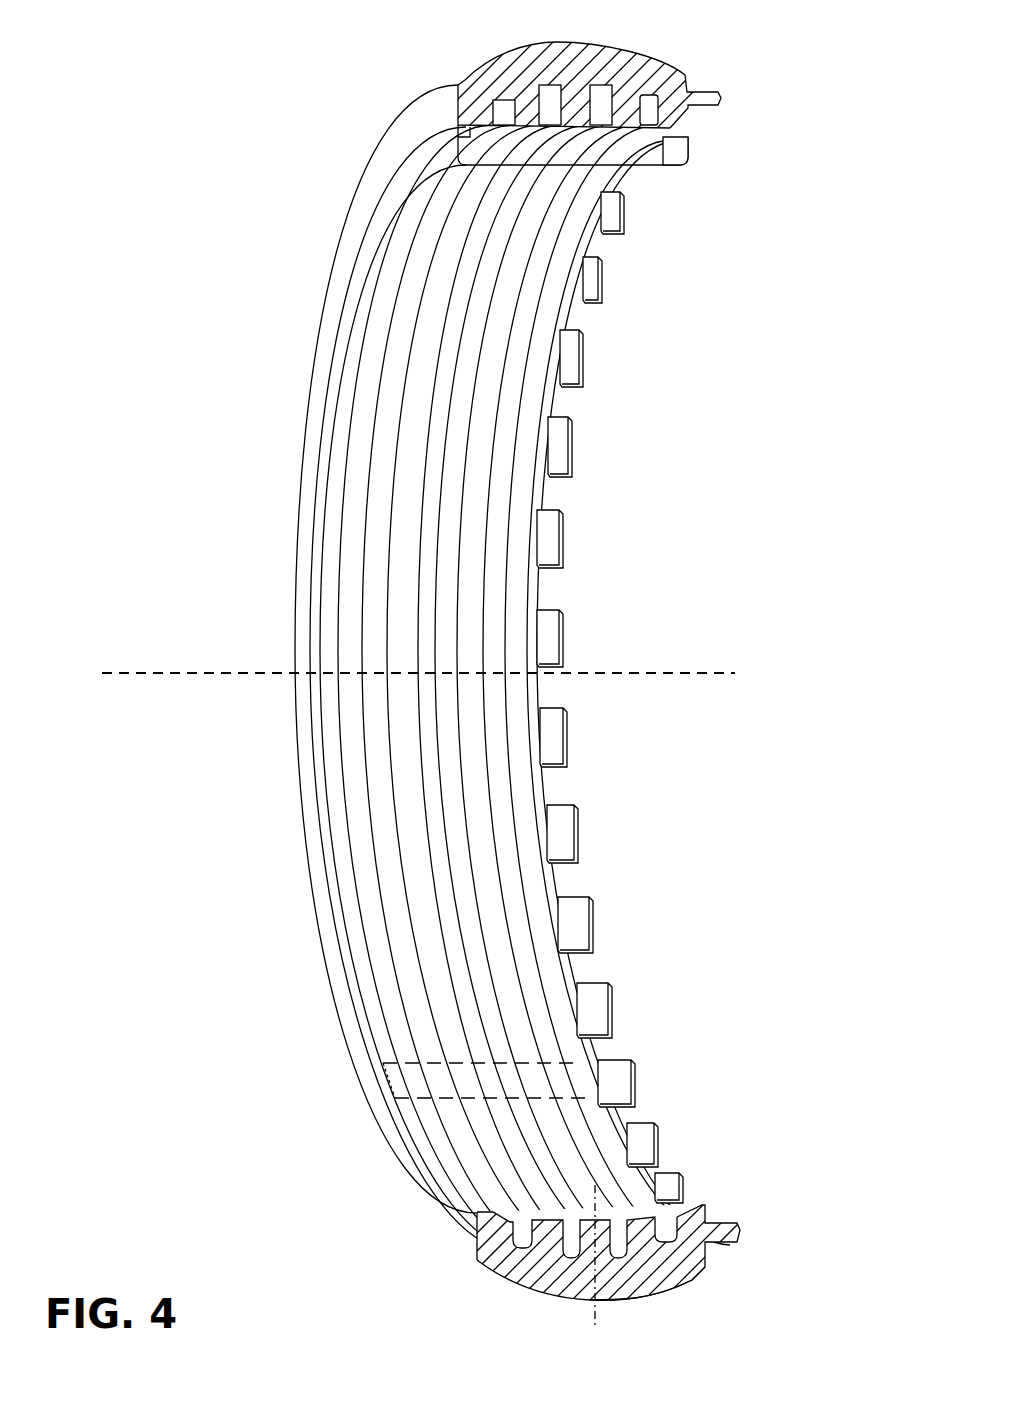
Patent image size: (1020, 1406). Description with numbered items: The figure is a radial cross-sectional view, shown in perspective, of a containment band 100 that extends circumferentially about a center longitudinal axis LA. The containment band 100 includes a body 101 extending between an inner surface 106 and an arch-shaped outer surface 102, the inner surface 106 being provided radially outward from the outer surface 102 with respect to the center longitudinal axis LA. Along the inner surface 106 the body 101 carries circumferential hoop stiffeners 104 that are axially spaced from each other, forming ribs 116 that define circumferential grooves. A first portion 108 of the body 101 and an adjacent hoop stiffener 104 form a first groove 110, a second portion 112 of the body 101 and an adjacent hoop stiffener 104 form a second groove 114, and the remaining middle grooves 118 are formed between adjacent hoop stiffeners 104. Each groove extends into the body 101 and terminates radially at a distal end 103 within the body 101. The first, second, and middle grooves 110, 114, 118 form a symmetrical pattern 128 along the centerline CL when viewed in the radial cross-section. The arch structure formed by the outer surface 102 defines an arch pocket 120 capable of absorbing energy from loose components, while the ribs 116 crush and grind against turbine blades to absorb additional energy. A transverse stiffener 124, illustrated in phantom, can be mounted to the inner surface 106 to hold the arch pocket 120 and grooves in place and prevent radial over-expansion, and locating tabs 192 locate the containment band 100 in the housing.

The containment band 100 is at (251, 88).
The body 101 is at (688, 83).
The outer surface 102 is at (668, 64).
The distal end 103 is at (556, 87).
The circumferential hoop stiffener 104 is at (492, 357).
The inner surface 106 is at (668, 164).
The first portion 108 is at (477, 1237).
The first groove 110 is at (477, 1258).
The second portion 112 is at (700, 1205).
The second groove 114 is at (665, 1262).
The rib 116 is at (537, 118).
The middle groove 118 is at (562, 1300).
The arch pocket 120 is at (573, 167).
The transverse stiffener 124 is at (580, 1100).
The symmetrical pattern 128 is at (655, 1272).
The locating tab 192 is at (550, 635).
The center longitudinal axis LA is at (235, 673).
The centerline CL is at (597, 1310).